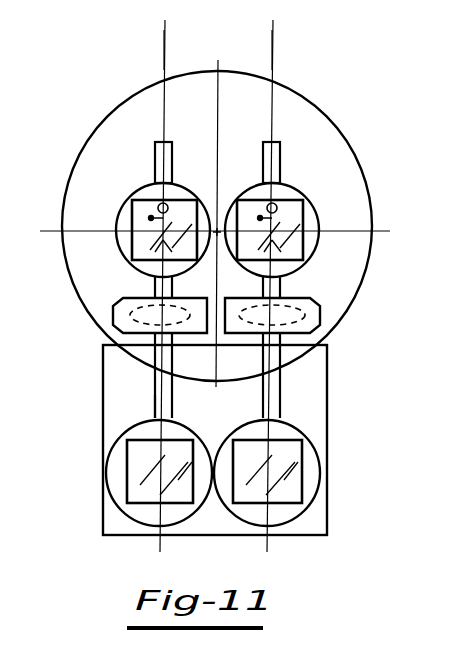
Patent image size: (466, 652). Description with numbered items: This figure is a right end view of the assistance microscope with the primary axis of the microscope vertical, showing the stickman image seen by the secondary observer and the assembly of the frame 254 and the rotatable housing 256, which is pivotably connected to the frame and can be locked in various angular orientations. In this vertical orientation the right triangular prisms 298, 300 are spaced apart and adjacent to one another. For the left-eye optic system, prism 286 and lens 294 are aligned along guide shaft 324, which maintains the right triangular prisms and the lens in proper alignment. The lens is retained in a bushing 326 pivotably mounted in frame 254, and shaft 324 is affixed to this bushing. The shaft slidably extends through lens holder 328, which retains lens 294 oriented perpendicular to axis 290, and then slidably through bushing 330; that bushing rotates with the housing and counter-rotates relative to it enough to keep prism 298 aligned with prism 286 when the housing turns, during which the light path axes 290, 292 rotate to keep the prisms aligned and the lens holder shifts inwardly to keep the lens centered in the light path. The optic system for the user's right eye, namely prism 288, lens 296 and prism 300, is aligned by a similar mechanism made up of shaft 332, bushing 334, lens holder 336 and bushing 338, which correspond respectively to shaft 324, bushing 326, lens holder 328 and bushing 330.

The frame 254 is at (329, 369).
The rotatable housing 256 is at (321, 111).
The prism 286 is at (128, 486).
The prism 288 is at (296, 494).
The axis 290 is at (165, 58).
The axis 292 is at (273, 45).
The lens 294 is at (113, 320).
The lens 296 is at (322, 317).
The right triangular prism 298 is at (151, 218).
The right triangular prism 300 is at (317, 232).
The guide shaft 324 is at (153, 396).
The bushing 326 is at (138, 508).
The lens holder 328 is at (155, 384).
The bushing 330 is at (152, 185).
The shaft 332 is at (282, 376).
The bushing 334 is at (308, 467).
The lens holder 336 is at (318, 303).
The bushing 338 is at (314, 248).